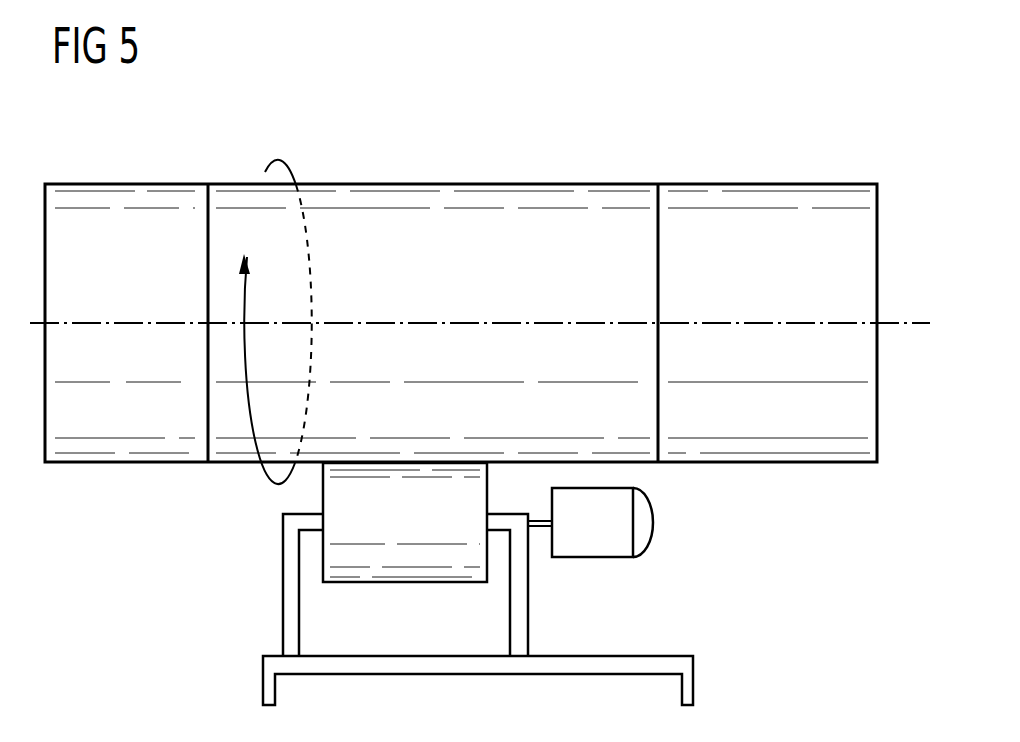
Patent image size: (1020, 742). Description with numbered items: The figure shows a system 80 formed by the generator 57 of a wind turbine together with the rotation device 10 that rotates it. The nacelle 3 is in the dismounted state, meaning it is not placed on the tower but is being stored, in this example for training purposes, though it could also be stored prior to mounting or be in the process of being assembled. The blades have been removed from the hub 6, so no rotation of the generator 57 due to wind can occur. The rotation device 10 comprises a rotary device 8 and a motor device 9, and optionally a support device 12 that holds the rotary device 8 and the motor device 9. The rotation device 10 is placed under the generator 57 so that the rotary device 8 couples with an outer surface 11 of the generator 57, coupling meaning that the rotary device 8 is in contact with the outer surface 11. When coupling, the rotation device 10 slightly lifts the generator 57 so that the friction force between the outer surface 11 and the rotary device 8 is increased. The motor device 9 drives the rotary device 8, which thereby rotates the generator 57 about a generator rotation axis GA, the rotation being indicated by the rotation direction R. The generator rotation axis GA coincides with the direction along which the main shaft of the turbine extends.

The system 80 is at (850, 116).
The hub 6 is at (123, 195).
The generator 57 is at (491, 195).
The nacelle 3 is at (762, 193).
The generator rotation axis GA is at (915, 323).
The rotation direction R is at (275, 160).
The outer surface 11 is at (367, 468).
The rotary device 8 is at (337, 556).
The rotation device 10 is at (748, 605).
The motor device 9 is at (648, 522).
The support device 12 is at (603, 657).